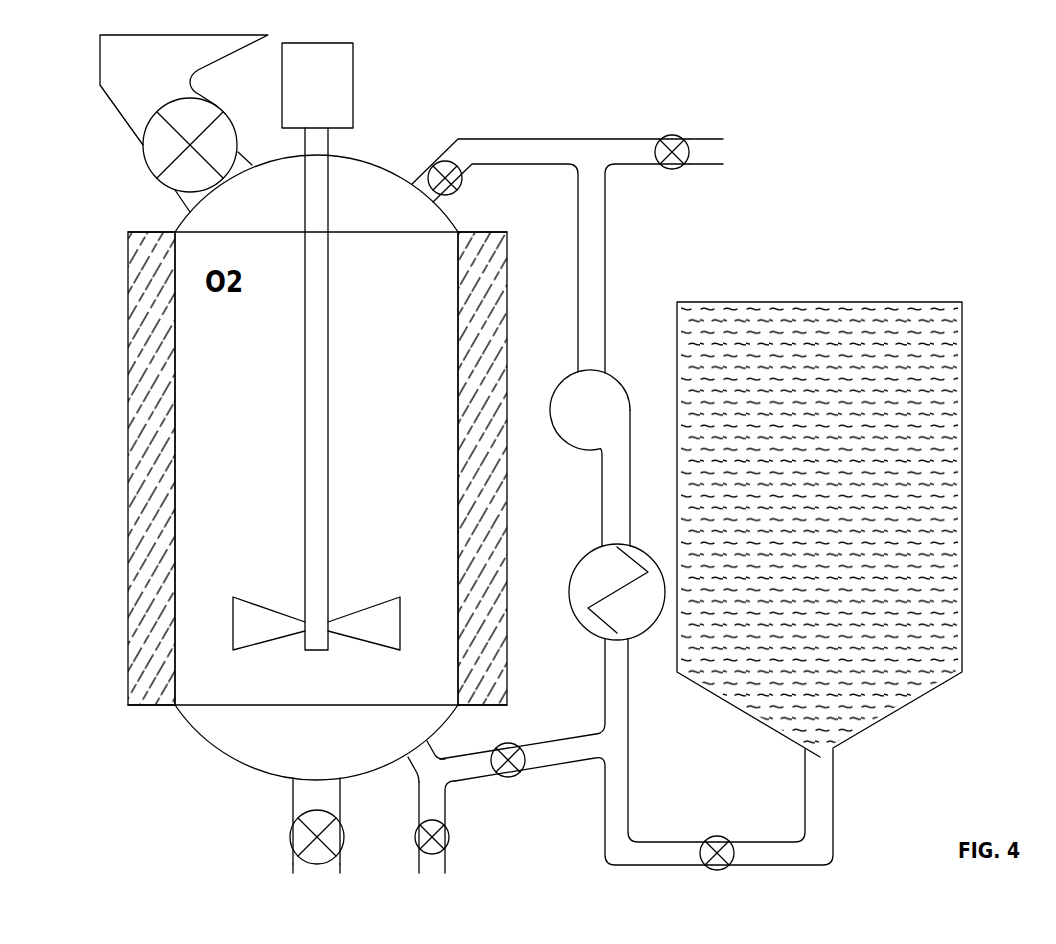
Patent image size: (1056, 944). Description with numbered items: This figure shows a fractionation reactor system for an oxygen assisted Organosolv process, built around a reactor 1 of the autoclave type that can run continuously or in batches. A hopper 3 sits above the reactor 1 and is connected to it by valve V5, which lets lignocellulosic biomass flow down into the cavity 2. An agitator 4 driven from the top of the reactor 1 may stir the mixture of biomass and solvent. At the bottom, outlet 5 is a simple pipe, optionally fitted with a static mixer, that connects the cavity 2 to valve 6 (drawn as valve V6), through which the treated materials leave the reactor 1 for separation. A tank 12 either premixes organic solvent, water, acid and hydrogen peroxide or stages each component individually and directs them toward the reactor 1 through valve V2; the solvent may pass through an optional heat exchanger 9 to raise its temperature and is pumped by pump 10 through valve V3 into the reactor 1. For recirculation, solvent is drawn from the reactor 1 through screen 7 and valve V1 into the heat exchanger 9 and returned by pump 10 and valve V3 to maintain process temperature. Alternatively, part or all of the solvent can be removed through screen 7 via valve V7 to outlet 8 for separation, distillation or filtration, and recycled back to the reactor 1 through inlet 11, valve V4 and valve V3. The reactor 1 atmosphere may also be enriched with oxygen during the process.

The reactor 1 is at (142, 338).
The cavity 2 is at (233, 403).
The hopper 3 is at (162, 53).
The agitator 4 is at (320, 93).
The outlet 5 is at (293, 778).
The valve 6 is at (322, 873).
The screen 7 is at (405, 762).
The outlet 8 is at (432, 873).
The heat exchanger 9 is at (588, 548).
The pump 10 is at (562, 368).
The inlet 11 is at (723, 145).
The tank 12 is at (892, 295).
The valve V1 is at (513, 741).
The valve V2 is at (714, 833).
The valve V3 is at (429, 160).
The valve V4 is at (666, 127).
The valve V5 is at (179, 155).
The valve V6 is at (294, 837).
The valve V7 is at (455, 842).